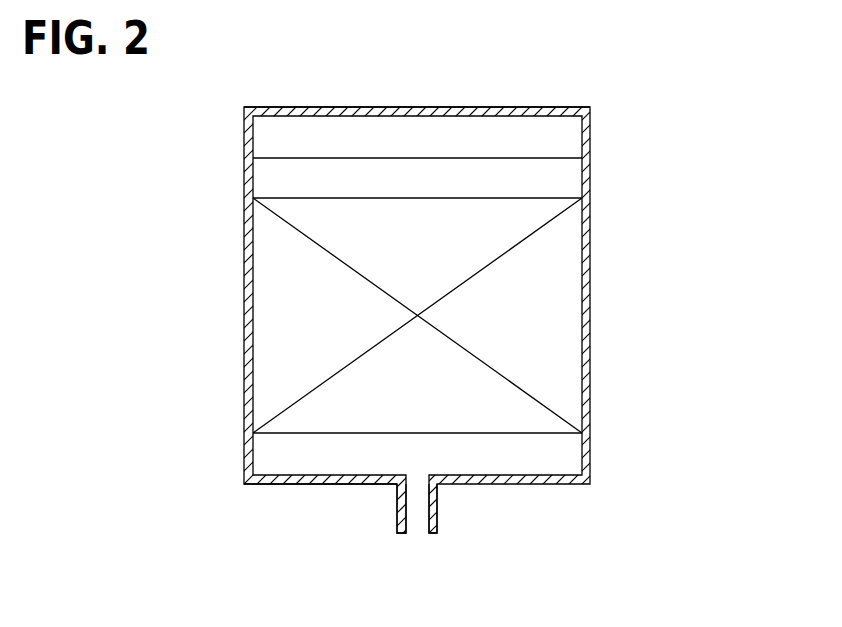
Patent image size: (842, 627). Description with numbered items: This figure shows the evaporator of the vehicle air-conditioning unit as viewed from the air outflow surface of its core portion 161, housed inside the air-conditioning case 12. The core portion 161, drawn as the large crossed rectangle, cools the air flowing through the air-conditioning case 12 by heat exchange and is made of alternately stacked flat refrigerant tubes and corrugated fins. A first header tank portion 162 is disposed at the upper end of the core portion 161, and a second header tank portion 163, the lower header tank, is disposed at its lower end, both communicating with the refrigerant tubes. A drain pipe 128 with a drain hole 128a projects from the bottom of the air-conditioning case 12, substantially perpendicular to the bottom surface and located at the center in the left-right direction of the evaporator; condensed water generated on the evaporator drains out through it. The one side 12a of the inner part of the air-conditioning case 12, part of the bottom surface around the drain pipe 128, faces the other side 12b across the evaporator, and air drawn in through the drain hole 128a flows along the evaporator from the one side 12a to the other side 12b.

The air-conditioning case 12 is at (535, 108).
The one side of the inner part of the air-conditioning case 12a is at (282, 472).
The other side of the inner part of the air-conditioning case 12b is at (326, 114).
The drain pipe 128 is at (397, 510).
The drain hole 128a is at (417, 517).
The core portion 161 is at (565, 297).
The first header tank portion 162 is at (565, 133).
The second header tank portion 163 is at (565, 455).